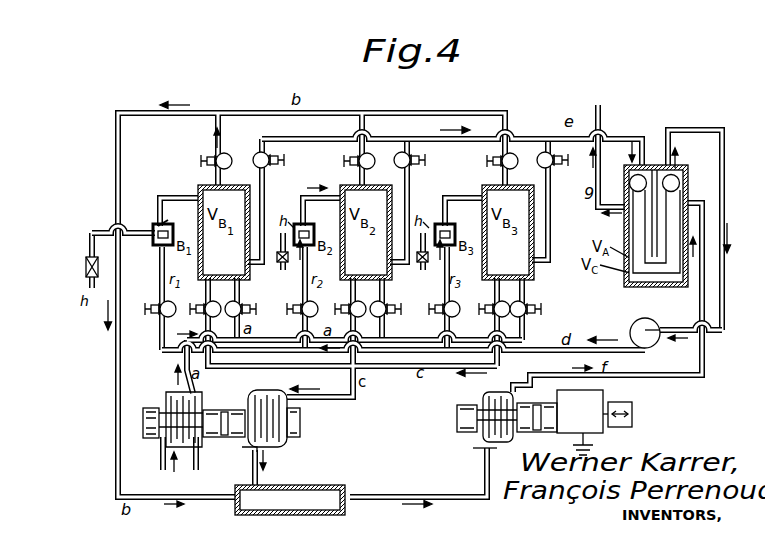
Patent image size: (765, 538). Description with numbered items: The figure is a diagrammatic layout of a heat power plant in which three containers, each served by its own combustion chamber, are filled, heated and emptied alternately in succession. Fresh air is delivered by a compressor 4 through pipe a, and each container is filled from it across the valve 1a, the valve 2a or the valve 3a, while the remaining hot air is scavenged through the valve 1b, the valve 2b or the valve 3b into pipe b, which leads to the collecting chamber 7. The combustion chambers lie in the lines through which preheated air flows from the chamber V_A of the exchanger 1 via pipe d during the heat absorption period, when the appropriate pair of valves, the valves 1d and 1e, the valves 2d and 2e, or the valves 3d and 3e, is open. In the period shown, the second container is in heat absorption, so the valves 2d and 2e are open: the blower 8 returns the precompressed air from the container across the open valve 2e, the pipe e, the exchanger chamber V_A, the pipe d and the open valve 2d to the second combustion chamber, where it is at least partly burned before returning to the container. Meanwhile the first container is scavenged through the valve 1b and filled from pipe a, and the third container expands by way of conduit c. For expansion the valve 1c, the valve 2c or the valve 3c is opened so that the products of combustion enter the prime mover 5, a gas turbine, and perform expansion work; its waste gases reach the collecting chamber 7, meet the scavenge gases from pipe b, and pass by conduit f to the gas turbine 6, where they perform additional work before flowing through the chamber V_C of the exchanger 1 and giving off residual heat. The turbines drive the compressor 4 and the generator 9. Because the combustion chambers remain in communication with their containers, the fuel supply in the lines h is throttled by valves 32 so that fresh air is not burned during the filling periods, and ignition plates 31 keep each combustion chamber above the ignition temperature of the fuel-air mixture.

The exchanger 1 is at (621, 233).
The compressor 4 is at (194, 436).
The prime mover 5 is at (289, 447).
The gas turbine 6 is at (483, 392).
The collecting chamber 7 is at (290, 500).
The blower 8 is at (632, 322).
The generator 9 is at (606, 396).
The ignition plates 31 is at (447, 219).
The valves 32 is at (86, 270).
The valve 1a is at (243, 301).
The valve 1b is at (207, 161).
The valve 1c is at (201, 302).
The valve 1d is at (153, 302).
The valve 1e is at (279, 160).
The valve 2a is at (389, 301).
The valve 2b is at (350, 161).
The valve 2c is at (348, 302).
The valve 2d is at (300, 302).
The valve 2e is at (420, 160).
The valve 3a is at (531, 301).
The valve 3b is at (493, 161).
The valve 3c is at (493, 302).
The valve 3d is at (443, 302).
The valve 3e is at (563, 160).